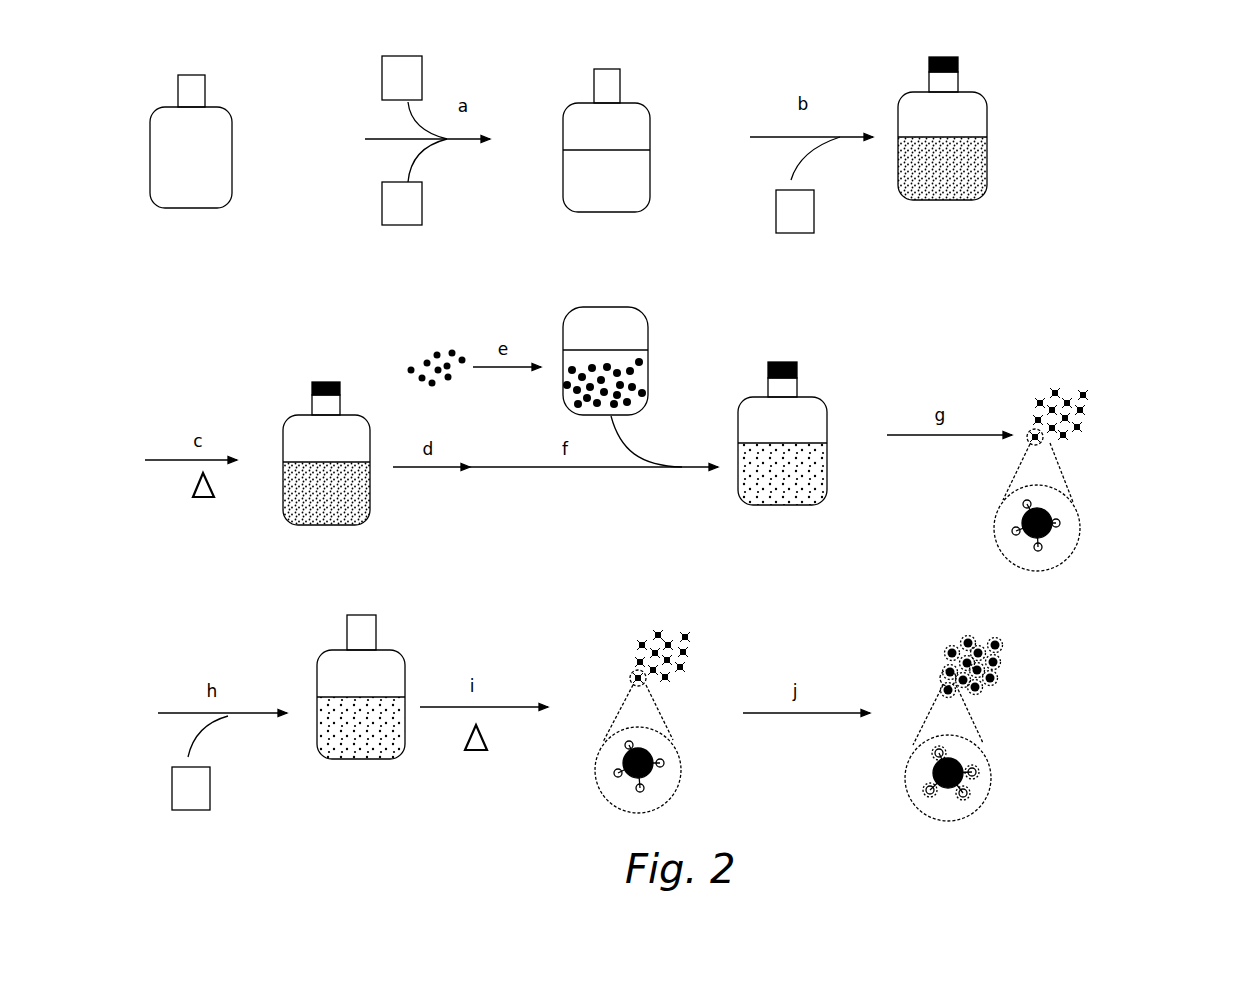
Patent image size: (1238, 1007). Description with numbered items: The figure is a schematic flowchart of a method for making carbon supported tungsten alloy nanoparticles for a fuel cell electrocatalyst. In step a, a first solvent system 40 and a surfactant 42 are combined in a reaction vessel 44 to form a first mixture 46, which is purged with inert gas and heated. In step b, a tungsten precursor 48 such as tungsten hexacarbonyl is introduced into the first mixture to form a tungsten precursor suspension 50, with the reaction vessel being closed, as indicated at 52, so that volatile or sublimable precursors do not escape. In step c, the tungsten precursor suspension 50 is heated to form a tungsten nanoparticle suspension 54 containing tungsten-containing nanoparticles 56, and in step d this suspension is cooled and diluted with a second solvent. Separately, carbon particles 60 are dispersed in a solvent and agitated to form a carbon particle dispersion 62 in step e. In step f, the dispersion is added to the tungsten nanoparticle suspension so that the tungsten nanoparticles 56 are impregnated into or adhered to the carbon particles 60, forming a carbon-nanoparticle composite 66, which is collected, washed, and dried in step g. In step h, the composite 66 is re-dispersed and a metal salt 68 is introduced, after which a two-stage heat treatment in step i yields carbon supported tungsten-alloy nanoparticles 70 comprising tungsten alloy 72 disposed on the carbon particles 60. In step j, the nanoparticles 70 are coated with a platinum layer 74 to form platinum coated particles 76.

The first solvent system 40 is at (402, 203).
The surfactant 42 is at (402, 78).
The reaction vessel 44 is at (222, 163).
The first mixture 46 is at (620, 183).
The tungsten precursor 48 is at (808, 185).
The tungsten precursor suspension 50 is at (912, 180).
The closed reaction vessel 52 is at (930, 57).
The tungsten nanoparticle suspension 54 is at (300, 505).
The tungsten-containing nanoparticles 56 is at (1068, 516).
The carbon particles 60 is at (443, 348).
The carbon particle dispersion 62 is at (640, 373).
The carbon-nanoparticle composite 66 is at (810, 463).
The metal salt 68 is at (200, 763).
The carbon supported tungsten-alloy nanoparticles 70 is at (700, 648).
The tungsten alloy 72 is at (672, 758).
The platinum layer 74 is at (975, 776).
The platinum coated particles 76 is at (1009, 658).